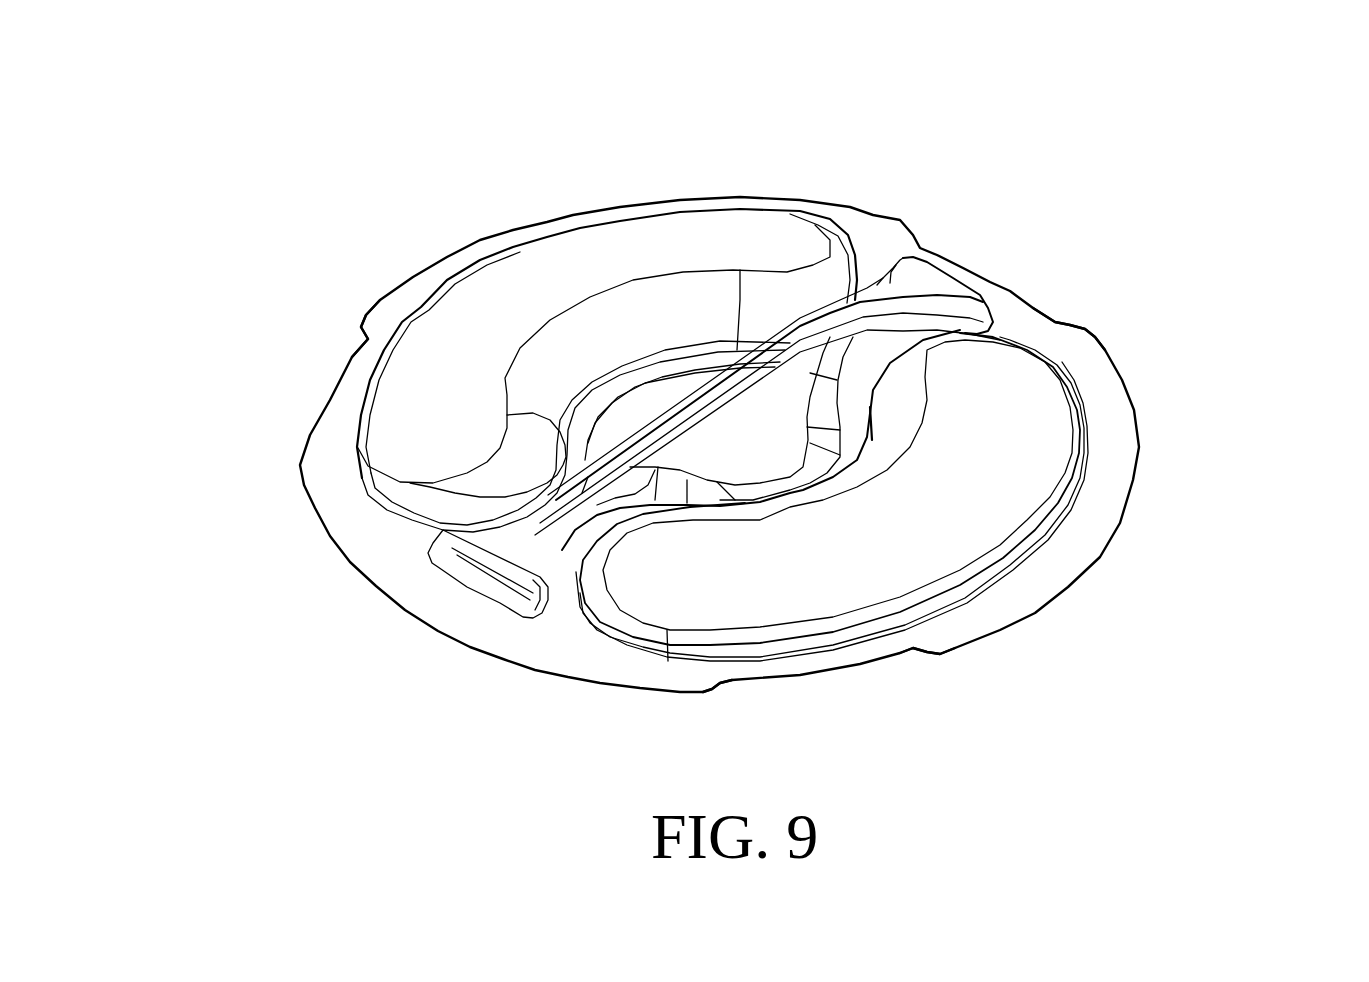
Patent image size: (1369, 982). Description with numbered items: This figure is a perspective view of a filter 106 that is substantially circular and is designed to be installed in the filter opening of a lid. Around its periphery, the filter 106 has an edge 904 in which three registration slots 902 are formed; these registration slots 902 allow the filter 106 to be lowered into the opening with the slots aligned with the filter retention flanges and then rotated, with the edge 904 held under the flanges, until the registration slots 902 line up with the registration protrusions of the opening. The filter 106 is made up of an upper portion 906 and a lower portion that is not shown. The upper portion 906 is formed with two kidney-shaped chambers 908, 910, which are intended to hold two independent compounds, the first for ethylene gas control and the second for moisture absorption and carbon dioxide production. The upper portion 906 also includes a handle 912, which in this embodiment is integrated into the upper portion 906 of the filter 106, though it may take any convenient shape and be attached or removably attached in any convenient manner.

The filter 106 is at (717, 415).
The registration slots 902 is at (340, 390).
The edge 904 is at (575, 213).
The upper portion 906 is at (1122, 442).
The kidney-shaped chamber 908 is at (780, 237).
The kidney-shaped chamber 910 is at (1043, 392).
The handle 912 is at (777, 357).